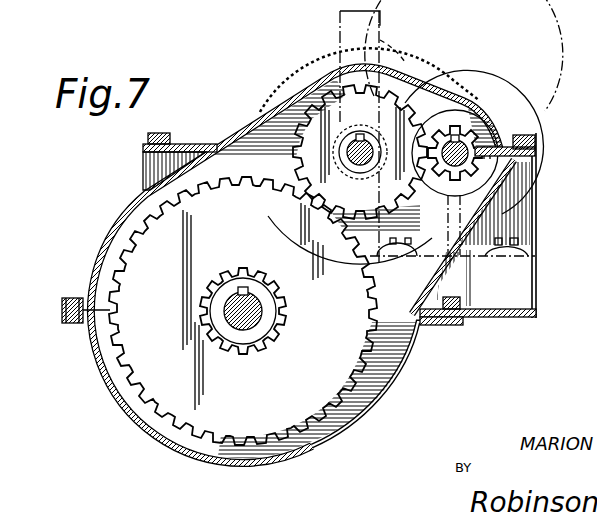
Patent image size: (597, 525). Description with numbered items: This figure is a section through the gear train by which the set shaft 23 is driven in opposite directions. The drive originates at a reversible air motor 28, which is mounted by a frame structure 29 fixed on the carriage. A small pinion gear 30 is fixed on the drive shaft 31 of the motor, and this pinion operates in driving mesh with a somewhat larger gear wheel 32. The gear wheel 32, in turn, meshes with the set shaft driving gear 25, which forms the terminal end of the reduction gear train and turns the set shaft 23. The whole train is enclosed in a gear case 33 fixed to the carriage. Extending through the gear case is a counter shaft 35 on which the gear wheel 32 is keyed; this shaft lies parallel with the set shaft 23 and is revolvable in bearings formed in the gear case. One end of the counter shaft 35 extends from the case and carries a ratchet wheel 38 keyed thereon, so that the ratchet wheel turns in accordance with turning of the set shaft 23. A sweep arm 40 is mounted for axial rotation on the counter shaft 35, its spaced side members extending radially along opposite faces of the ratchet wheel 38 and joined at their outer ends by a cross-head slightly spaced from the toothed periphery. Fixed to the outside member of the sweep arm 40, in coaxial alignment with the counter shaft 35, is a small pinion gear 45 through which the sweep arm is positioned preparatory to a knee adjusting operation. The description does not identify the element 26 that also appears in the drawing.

The set shaft 23 is at (226, 307).
The set shaft driving gear 25 is at (218, 196).
The pinion gear 26 is at (262, 357).
The reversible air motor 28 is at (490, 63).
The frame structure 29 is at (524, 216).
The small pinion gear 30 is at (478, 140).
The drive shaft 31 is at (522, 146).
The gear wheel 32 is at (282, 91).
The gear case 33 is at (124, 212).
The counter shaft 35 is at (364, 171).
The ratchet wheel 38 is at (413, 59).
The sweep arm 40 is at (384, 22).
The small pinion gear 45 is at (379, 92).